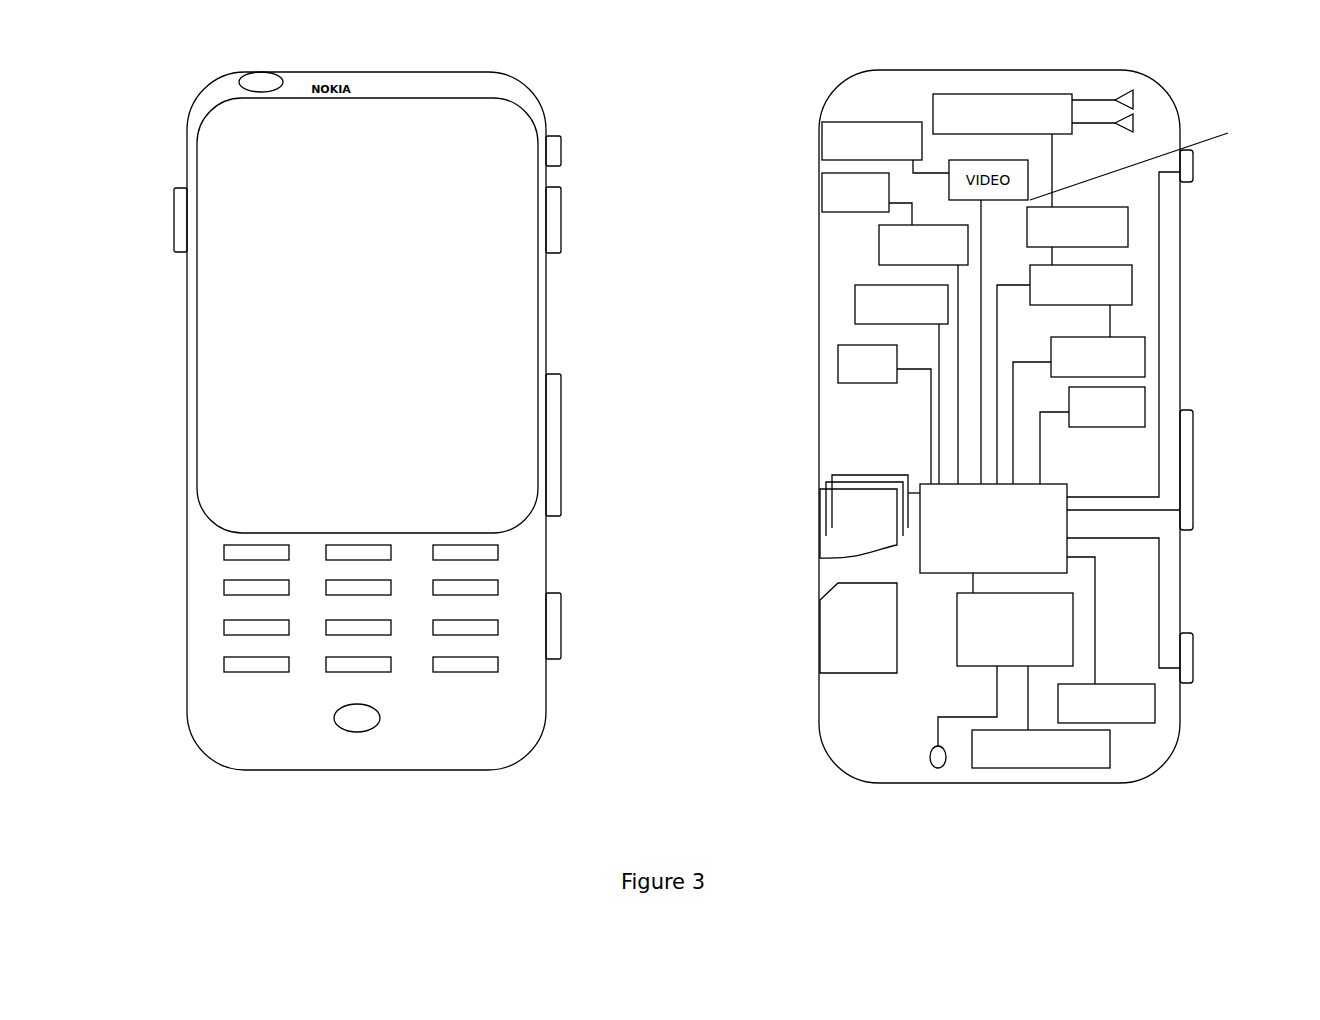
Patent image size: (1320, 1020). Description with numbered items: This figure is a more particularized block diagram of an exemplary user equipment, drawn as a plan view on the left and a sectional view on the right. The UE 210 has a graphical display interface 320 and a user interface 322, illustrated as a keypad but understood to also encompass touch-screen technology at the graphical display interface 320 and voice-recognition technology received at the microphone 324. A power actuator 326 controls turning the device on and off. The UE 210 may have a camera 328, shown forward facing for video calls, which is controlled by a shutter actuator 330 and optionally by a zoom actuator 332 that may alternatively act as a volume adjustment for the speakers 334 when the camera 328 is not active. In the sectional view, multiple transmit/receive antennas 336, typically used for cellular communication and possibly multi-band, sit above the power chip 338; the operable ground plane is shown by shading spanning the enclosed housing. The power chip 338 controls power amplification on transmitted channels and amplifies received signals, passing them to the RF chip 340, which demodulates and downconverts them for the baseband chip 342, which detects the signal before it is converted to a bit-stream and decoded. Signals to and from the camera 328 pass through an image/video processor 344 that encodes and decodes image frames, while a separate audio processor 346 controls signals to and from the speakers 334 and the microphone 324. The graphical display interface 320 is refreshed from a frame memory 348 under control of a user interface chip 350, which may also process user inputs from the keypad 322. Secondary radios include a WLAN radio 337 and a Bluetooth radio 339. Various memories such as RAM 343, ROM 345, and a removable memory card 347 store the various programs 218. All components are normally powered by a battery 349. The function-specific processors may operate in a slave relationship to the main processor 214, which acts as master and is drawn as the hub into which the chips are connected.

The user equipment 210 is at (160, 100).
The main processor 214 is at (928, 484).
The programs 218 is at (830, 533).
The graphical display interface 320 is at (261, 292).
The user interface 322 is at (188, 588).
The microphone 324 is at (352, 724).
The power actuator 326 is at (564, 136).
The camera 328 is at (263, 72).
The shutter actuator 330 is at (560, 600).
The zoom actuator 332 is at (563, 390).
The speaker 334 is at (564, 203).
The transmit/receive antennas 336 is at (1128, 96).
The wireless local area network radio 337 is at (855, 308).
The power chip 338 is at (977, 94).
The Bluetooth radio 339 is at (837, 367).
The radio-frequency chip 340 is at (1130, 213).
The baseband chip 342 is at (1133, 275).
The random access memory 343 is at (1143, 350).
The image/video processor 344 is at (1147, 160).
The read only memory 345 is at (1145, 395).
The audio processor 346 is at (878, 250).
The memory card 347 is at (832, 608).
The frame memory 348 is at (1037, 768).
The battery 349 is at (1143, 723).
The user interface chip 350 is at (957, 630).